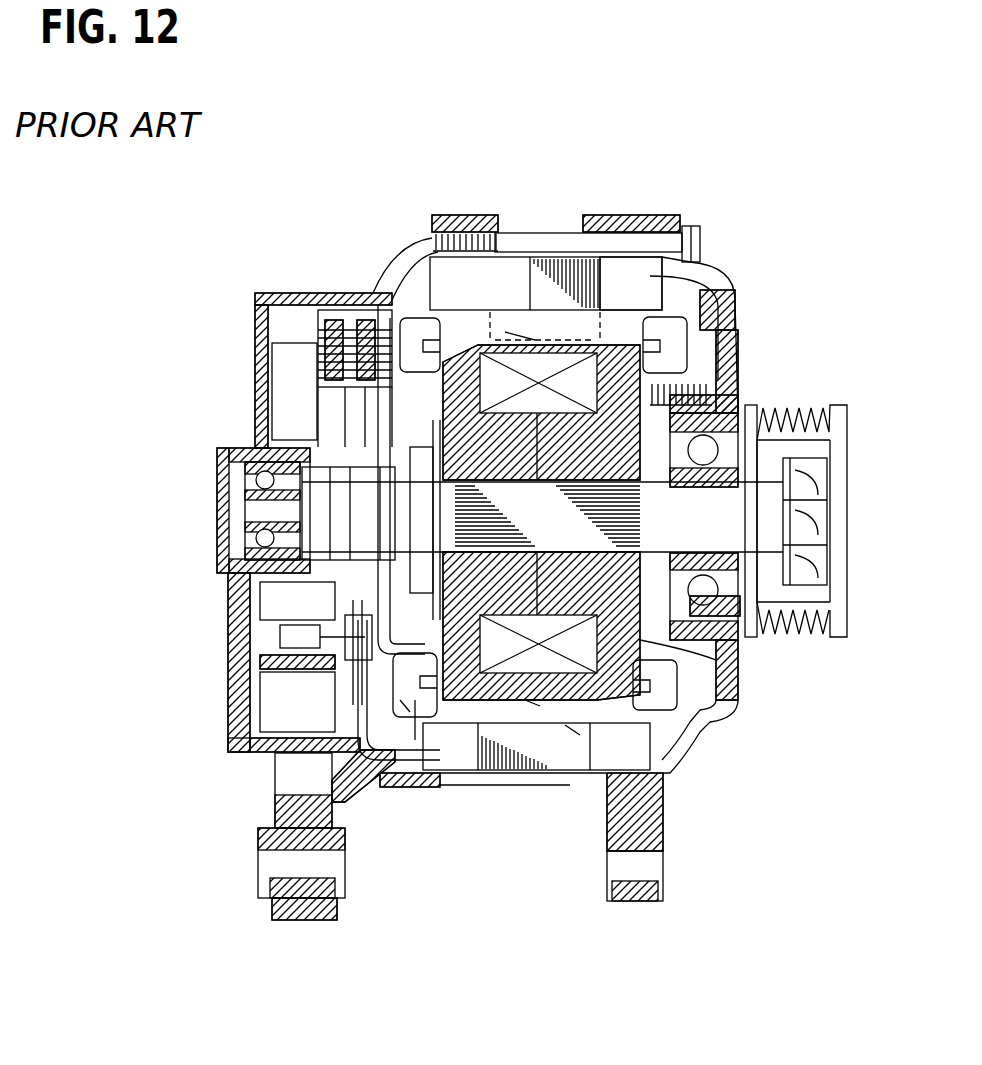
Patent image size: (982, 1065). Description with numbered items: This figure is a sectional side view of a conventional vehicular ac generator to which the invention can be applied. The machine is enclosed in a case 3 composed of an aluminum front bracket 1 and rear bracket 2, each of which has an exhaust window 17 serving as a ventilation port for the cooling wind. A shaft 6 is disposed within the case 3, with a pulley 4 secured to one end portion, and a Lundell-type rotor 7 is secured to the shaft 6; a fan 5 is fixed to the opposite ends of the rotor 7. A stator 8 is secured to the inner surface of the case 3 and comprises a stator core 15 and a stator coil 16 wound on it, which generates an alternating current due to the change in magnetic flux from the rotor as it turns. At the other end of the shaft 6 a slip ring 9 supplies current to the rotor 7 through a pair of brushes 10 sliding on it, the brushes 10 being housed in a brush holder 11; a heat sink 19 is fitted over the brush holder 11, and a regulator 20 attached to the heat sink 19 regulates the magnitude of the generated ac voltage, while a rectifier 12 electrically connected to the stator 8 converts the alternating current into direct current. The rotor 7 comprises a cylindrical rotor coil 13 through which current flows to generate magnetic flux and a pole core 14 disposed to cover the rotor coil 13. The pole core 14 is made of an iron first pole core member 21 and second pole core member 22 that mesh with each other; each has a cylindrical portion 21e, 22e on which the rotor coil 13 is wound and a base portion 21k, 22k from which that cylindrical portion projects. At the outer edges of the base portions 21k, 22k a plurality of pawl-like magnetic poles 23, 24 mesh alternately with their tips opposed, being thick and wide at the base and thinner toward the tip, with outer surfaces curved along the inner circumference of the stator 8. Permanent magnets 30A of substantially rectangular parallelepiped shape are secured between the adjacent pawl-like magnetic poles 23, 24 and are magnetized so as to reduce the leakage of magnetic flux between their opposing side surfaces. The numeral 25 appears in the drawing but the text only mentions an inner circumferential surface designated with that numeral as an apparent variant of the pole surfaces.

The front bracket 1 is at (548, 298).
The rear bracket 2 is at (473, 203).
The case 3 is at (542, 444).
The pulley 4 is at (792, 468).
The fan 5 is at (368, 774).
The shaft 6 is at (768, 505).
The rotor 7 is at (630, 534).
The stator 8 is at (600, 214).
The slip ring 9 is at (335, 510).
The brushes 10 is at (222, 470).
The brush holder 11 is at (336, 323).
The rectifier 12 is at (272, 652).
The rotor coil 13 is at (640, 660).
The pole core 14 is at (600, 690).
The stator core 15 is at (626, 286).
The stator coil 16 is at (668, 250).
The exhaust window 17 is at (350, 762).
The heat sink 19 is at (280, 394).
The regulator 20 is at (310, 364).
The first pole core member 21 is at (401, 563).
The base portion 21k is at (415, 732).
The cylindrical portion 21e is at (405, 712).
The second pole core member 22 is at (621, 557).
The cylindrical portion 22e is at (708, 612).
The base portion 22k is at (650, 642).
The pawl-like magnetic poles 23 is at (573, 732).
The pawl-like magnetic poles 24 is at (507, 708).
The slip ring 25 is at (530, 712).
The permanent magnets 30A is at (520, 338).